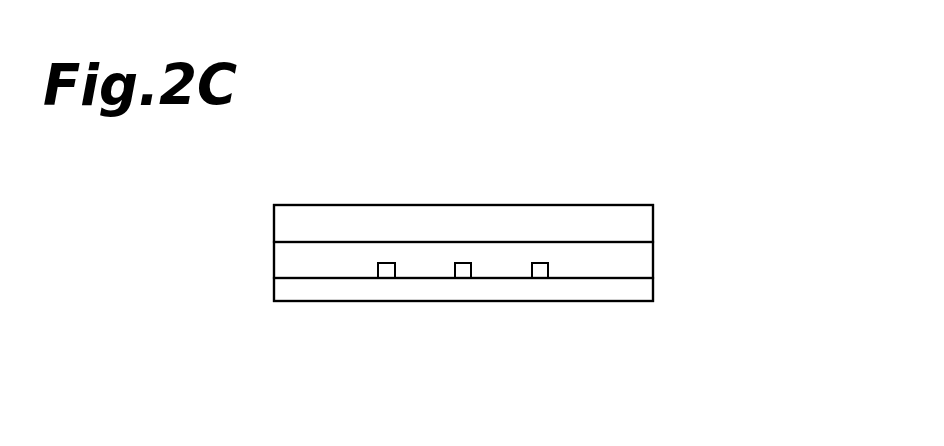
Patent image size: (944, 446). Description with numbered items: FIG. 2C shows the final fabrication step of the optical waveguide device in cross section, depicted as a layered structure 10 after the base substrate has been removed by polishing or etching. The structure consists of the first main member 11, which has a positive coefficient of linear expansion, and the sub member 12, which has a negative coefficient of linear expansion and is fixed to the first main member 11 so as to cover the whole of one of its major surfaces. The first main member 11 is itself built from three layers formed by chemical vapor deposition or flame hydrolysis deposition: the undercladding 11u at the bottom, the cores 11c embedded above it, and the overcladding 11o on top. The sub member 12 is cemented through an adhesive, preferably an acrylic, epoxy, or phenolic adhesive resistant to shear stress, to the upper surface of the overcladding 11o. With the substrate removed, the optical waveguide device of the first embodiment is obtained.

The laminated substrate structure 10 is at (558, 182).
The sub member 12 is at (653, 213).
The first main member 11 is at (555, 312).
The overcladding 11o is at (517, 312).
The undercladding 11u is at (653, 287).
The cores 11c is at (445, 325).